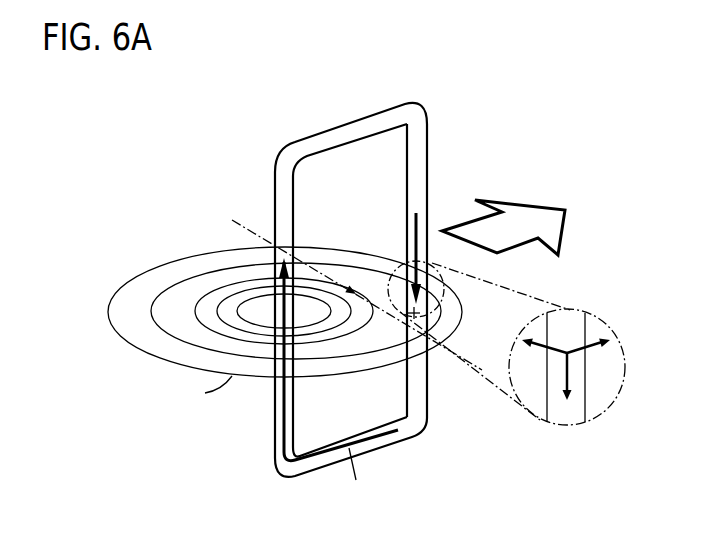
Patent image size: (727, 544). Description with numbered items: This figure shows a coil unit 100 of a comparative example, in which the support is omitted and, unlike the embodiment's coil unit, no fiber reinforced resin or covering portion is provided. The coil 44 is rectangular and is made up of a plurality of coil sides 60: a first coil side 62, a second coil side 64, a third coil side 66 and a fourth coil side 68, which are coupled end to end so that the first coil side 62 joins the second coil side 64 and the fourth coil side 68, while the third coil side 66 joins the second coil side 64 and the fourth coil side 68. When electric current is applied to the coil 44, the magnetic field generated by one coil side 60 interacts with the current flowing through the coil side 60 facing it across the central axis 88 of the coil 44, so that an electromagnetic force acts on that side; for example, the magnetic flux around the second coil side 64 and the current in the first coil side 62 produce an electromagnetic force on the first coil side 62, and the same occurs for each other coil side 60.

The coil unit 100 is at (92, 130).
The coil 44 is at (342, 116).
The coil sides 60 is at (352, 294).
The first coil side 62 is at (417, 150).
The second coil side 64 is at (330, 143).
The third coil side 66 is at (287, 196).
The fourth coil side 68 is at (377, 448).
The central axis 88 is at (343, 286).